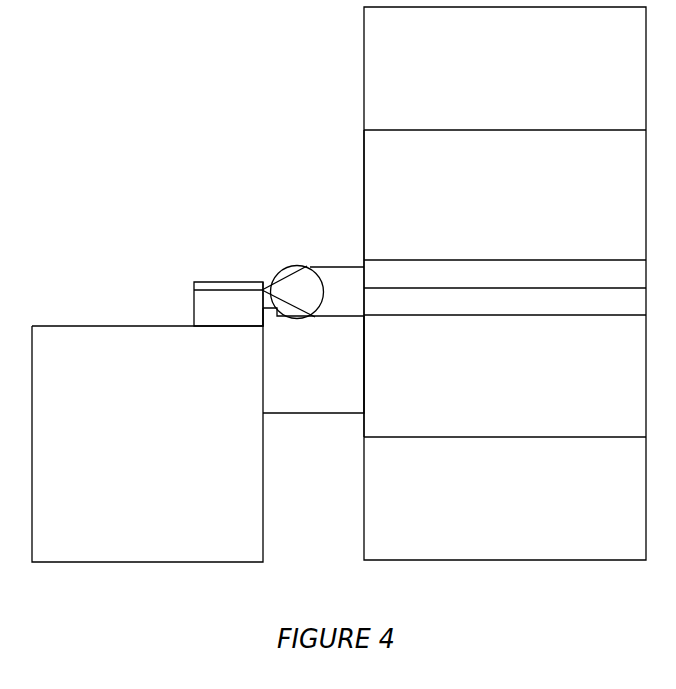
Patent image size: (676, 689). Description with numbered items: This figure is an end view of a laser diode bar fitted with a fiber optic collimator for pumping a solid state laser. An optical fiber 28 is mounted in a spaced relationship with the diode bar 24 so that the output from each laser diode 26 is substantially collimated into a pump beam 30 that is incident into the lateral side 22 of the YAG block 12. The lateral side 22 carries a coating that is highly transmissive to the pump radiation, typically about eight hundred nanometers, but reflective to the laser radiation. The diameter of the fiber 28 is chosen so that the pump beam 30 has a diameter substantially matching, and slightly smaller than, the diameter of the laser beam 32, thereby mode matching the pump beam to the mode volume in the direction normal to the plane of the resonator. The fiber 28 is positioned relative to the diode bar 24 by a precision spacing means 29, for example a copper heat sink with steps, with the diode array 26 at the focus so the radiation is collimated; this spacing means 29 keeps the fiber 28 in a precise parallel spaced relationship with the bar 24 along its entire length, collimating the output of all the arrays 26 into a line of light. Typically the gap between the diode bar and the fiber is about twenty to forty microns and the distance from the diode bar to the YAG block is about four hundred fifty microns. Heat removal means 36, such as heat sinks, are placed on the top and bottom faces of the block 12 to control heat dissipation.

The YAG block 12 is at (568, 204).
The lateral side 22 is at (361, 221).
The diode bar 24 is at (219, 310).
The laser diode 26 is at (258, 297).
The optical fiber 28 is at (274, 268).
The precision spacing means 29 is at (296, 417).
The pump beam 30 is at (332, 266).
The laser beam 32 is at (473, 257).
The heat removal means 36 is at (514, 75).